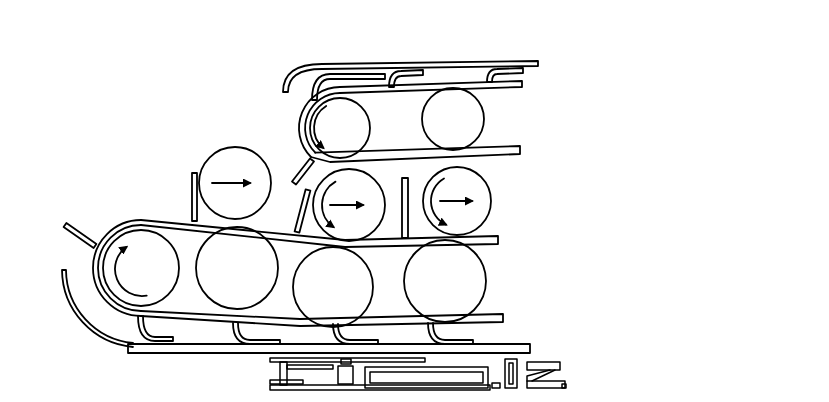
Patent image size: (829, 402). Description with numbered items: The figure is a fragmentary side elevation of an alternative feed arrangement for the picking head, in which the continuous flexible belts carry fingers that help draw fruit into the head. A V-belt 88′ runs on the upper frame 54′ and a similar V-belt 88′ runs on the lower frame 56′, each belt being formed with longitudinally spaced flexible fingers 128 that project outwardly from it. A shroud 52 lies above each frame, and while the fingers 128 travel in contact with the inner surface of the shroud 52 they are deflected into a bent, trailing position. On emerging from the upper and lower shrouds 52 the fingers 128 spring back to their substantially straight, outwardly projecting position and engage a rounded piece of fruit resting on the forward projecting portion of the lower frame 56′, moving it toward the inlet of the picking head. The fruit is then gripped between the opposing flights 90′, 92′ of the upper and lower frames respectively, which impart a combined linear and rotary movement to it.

The shroud 52 is at (343, 64).
The guide bracket 128 is at (504, 69).
The upper frame 54′ is at (303, 119).
The lower frame 56′ is at (116, 298).
The V-belt 88′ is at (508, 92).
The flight of the upper frame 90′ is at (521, 152).
The flight of the lower frame 92′ is at (500, 240).